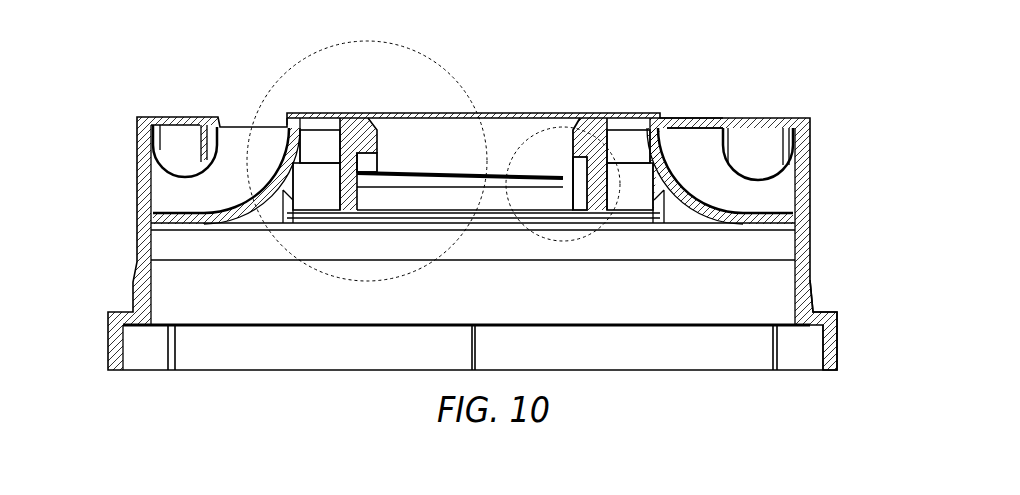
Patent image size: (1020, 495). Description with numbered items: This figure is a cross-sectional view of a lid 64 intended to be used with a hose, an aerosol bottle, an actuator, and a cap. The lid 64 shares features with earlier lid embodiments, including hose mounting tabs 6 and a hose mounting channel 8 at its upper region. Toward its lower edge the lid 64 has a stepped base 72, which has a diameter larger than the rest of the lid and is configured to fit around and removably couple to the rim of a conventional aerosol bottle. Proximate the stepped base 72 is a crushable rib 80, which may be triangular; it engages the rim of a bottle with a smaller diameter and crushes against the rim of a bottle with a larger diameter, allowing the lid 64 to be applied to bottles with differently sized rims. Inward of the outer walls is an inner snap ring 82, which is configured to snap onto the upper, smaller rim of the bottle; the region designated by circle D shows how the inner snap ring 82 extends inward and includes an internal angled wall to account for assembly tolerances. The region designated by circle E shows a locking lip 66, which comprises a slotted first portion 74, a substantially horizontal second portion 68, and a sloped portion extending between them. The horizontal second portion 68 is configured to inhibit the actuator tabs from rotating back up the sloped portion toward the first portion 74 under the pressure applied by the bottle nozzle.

The hose mounting tabs 6 is at (670, 127).
The hose mounting channel 8 is at (755, 176).
The lid 64 is at (860, 141).
The locking lip 66 is at (453, 187).
The second portion 68 is at (547, 190).
The stepped base 72 is at (835, 311).
The first portion 74 is at (340, 200).
The crushable rib 80 is at (779, 366).
The inner snap ring 82 is at (640, 135).
The circle D is at (447, 68).
The circle E is at (541, 128).